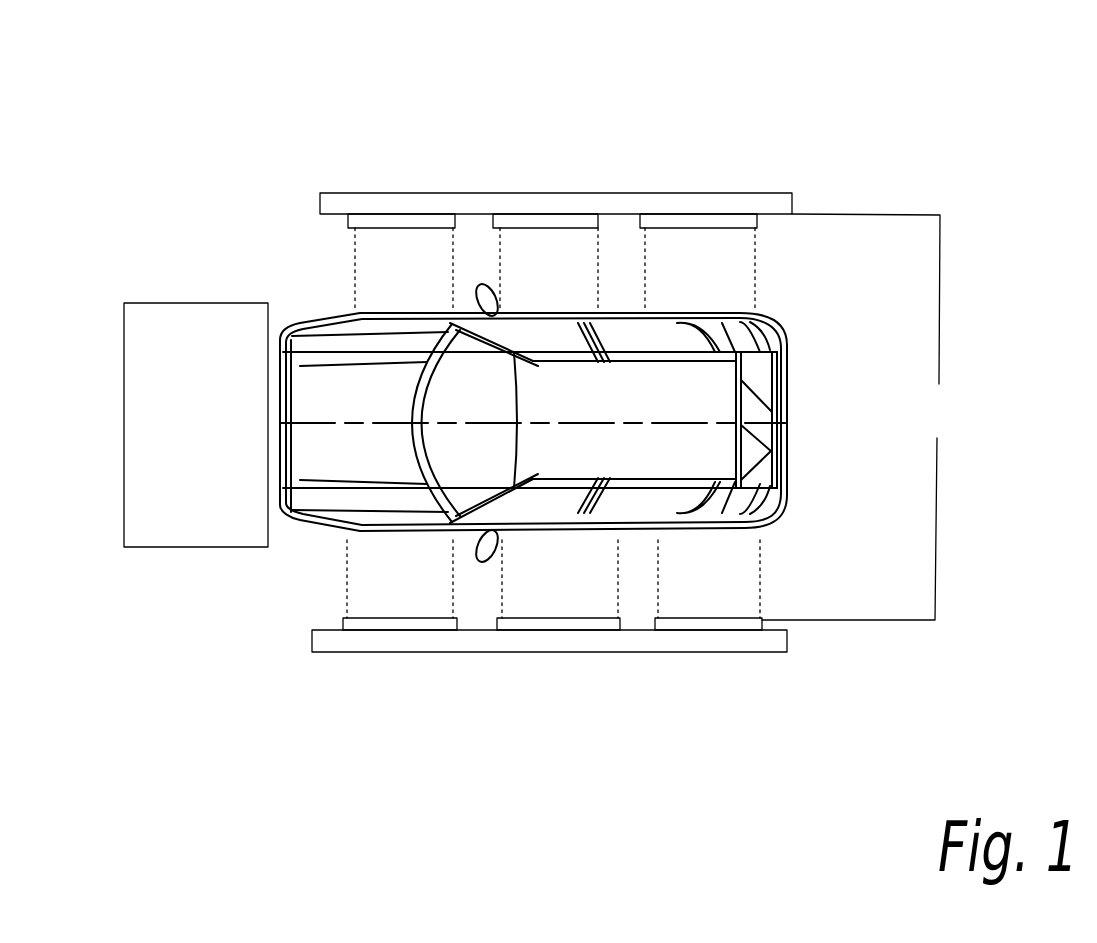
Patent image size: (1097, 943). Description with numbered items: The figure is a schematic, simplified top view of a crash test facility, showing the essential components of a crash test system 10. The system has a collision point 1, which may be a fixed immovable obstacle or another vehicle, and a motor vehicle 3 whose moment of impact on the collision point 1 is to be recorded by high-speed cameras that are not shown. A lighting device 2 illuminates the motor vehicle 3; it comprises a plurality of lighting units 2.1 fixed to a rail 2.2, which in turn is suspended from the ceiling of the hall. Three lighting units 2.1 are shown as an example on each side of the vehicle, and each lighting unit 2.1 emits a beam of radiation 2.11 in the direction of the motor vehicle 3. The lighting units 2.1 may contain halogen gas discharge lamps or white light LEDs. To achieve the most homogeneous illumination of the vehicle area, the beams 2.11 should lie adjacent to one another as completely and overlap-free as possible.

The crash test system 10 is at (100, 90).
The collision point 1 is at (215, 426).
The lighting device 2 is at (855, 417).
The lighting unit 2.1 is at (700, 207).
The rail 2.2 is at (338, 207).
The beam of radiation 2.11 is at (707, 257).
The motor vehicle 3 is at (576, 411).